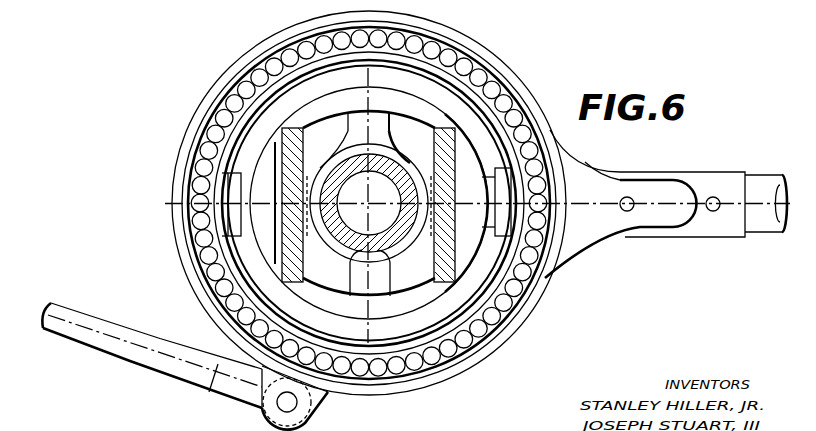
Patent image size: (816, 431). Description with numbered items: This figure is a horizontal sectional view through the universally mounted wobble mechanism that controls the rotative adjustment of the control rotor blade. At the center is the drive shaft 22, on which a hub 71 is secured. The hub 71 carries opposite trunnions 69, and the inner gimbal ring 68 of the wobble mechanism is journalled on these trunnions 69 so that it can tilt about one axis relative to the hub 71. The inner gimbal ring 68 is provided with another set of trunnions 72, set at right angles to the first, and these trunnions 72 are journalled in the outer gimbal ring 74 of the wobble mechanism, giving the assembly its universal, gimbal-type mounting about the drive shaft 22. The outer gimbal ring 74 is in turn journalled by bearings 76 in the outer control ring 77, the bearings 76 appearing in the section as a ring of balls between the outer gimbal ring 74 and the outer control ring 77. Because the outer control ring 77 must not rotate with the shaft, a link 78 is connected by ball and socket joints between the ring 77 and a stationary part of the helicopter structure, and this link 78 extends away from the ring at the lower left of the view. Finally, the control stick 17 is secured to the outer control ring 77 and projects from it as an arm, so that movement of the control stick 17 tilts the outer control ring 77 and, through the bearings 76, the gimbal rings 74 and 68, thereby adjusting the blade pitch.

The control stick 17 is at (756, 176).
The drive shaft 22 is at (346, 176).
The inner gimbal ring 68 is at (333, 98).
The trunnions 69 is at (348, 131).
The hub 71 is at (405, 165).
The trunnions 72 is at (248, 183).
The outer gimbal ring 74 is at (257, 110).
The bearings 76 is at (203, 177).
The outer control ring 77 is at (200, 113).
The link 78 is at (102, 322).